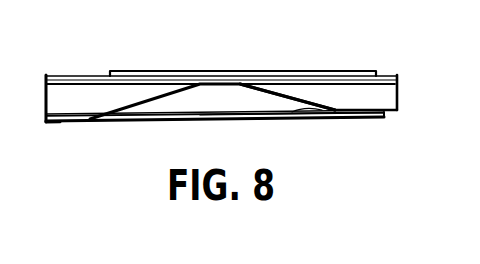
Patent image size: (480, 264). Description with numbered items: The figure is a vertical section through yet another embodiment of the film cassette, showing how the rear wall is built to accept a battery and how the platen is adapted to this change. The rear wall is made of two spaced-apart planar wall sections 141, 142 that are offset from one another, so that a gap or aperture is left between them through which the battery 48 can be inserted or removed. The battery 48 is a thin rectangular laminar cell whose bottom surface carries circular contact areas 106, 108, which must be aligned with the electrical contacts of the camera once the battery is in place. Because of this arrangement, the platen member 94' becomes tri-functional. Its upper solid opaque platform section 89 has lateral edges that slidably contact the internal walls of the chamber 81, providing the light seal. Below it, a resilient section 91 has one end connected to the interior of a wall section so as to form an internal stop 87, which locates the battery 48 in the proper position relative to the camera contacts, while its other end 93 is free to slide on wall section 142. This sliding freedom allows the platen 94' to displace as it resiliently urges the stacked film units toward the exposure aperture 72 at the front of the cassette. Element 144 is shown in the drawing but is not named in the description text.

The exposure aperture 72 is at (194, 64).
The upper solid opaque platform section 89 is at (84, 85).
The platen member 94' is at (220, 56).
The chamber 81 is at (50, 104).
The resilient section 91 is at (112, 107).
The other end 93 is at (331, 110).
The internal stop 87 is at (50, 127).
The battery 48 is at (166, 124).
The planar wall section 141 is at (218, 124).
The planar wall section 142 is at (292, 114).
The tab 144 is at (321, 125).
The circular contact area 106 is at (254, 140).
The circular contact area 108 is at (353, 119).